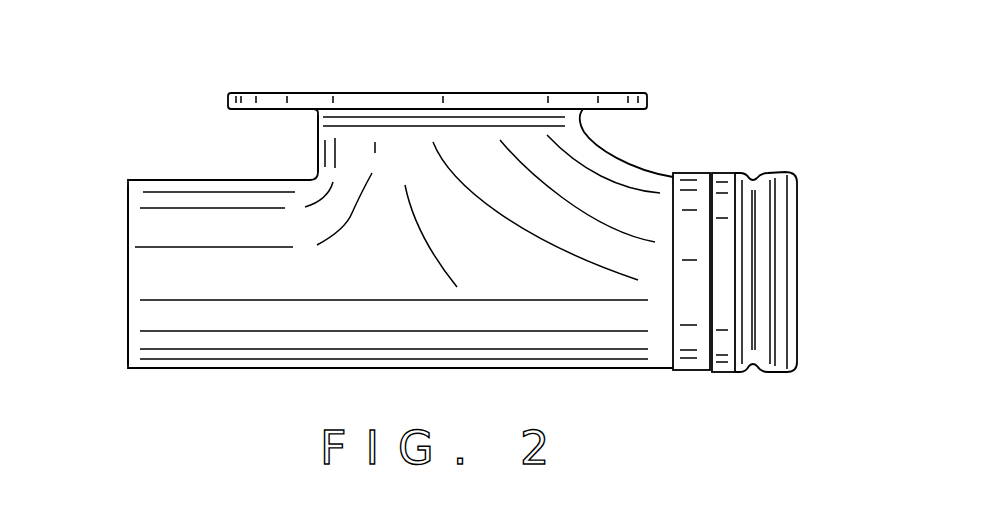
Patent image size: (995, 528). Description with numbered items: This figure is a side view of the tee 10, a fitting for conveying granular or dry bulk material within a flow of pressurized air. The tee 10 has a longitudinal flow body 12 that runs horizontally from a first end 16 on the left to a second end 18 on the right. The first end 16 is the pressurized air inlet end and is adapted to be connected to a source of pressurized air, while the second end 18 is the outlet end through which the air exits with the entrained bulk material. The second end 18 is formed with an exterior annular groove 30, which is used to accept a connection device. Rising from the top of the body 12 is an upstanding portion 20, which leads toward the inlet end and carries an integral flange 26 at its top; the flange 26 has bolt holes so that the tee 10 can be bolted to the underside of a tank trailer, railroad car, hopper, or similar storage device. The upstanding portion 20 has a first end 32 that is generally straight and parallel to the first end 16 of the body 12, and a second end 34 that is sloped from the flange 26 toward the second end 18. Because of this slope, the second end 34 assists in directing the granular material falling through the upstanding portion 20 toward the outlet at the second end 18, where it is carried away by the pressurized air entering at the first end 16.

The tee 10 is at (632, 75).
The longitudinal flow body 12 is at (277, 322).
The first end 16 is at (128, 293).
The second end 18 is at (797, 250).
The upstanding portion 20 is at (292, 135).
The flange 26 is at (482, 92).
The exterior annular groove 30 is at (753, 178).
The first end of upstanding portion 32 is at (318, 147).
The second end of upstanding portion 34 is at (612, 150).